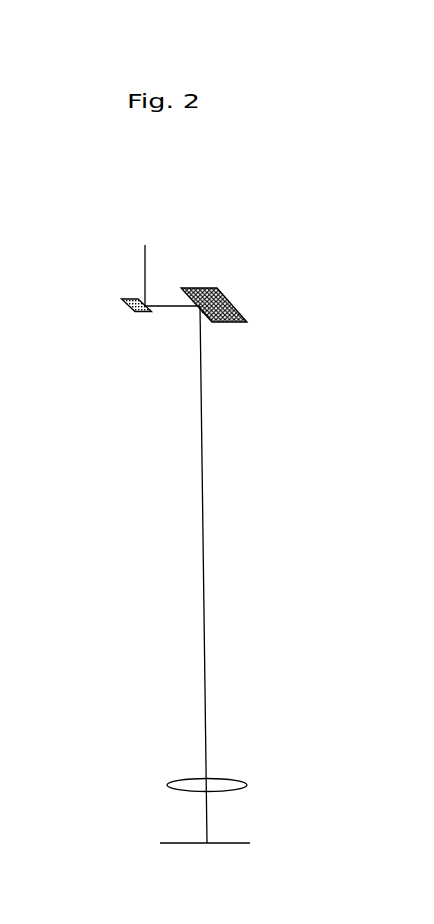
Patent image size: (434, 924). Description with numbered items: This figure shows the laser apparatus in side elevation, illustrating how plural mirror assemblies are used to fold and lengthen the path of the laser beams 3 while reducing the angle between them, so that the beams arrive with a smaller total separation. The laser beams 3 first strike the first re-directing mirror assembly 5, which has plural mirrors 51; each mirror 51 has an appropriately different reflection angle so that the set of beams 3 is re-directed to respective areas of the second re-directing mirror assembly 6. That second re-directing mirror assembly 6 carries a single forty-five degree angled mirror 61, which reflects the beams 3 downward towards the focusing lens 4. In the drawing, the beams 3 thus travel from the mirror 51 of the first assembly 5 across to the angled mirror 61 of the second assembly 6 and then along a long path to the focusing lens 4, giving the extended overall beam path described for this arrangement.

The laser beams 3 is at (203, 560).
The focusing lens 4 is at (242, 778).
The first re-directing mirror assembly 5 is at (125, 315).
The second re-directing mirror assembly 6 is at (203, 312).
The mirror 51 is at (127, 296).
The 45° angled mirror 61 is at (207, 312).